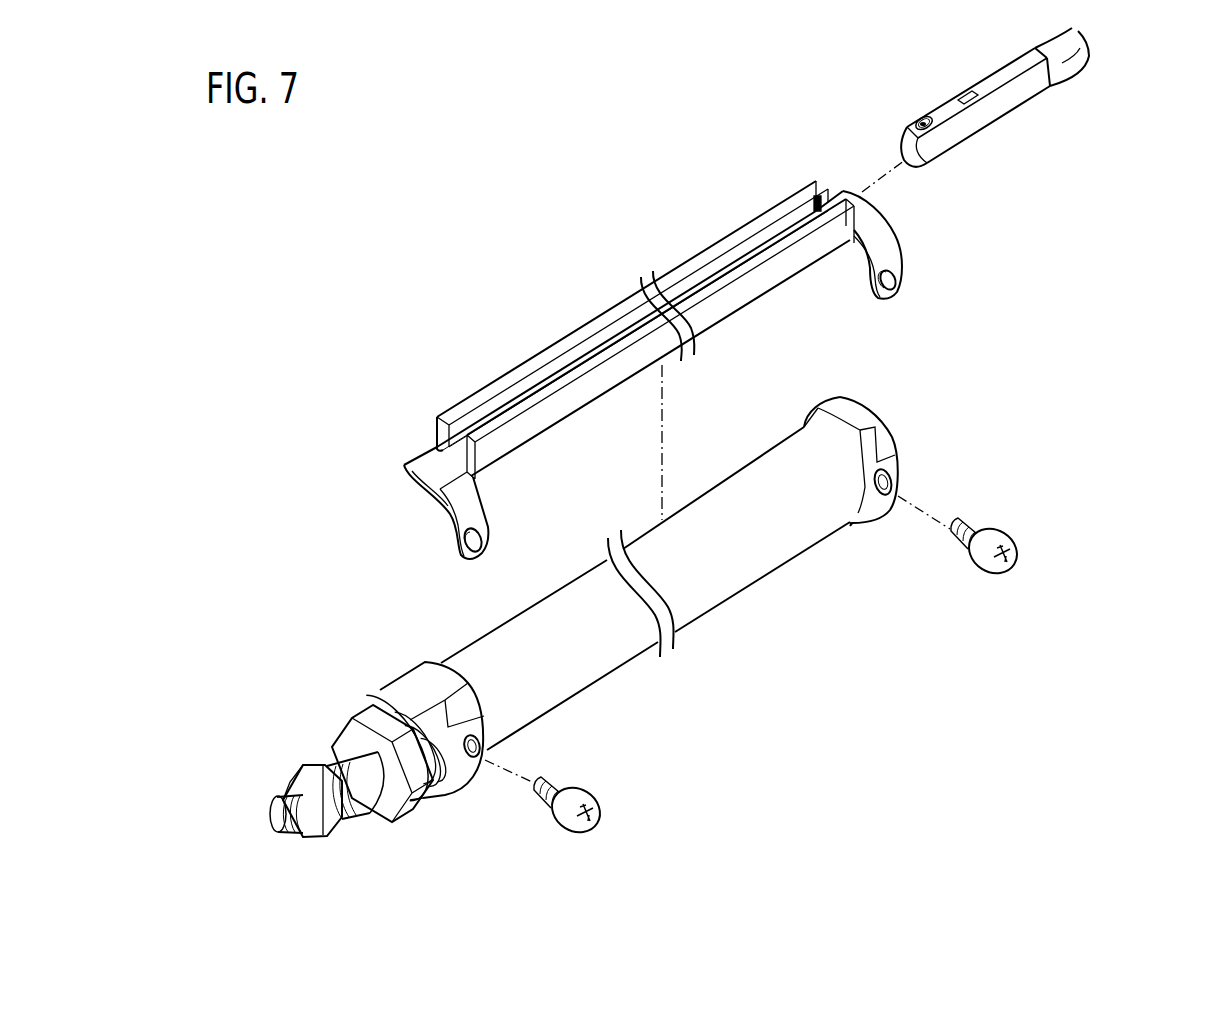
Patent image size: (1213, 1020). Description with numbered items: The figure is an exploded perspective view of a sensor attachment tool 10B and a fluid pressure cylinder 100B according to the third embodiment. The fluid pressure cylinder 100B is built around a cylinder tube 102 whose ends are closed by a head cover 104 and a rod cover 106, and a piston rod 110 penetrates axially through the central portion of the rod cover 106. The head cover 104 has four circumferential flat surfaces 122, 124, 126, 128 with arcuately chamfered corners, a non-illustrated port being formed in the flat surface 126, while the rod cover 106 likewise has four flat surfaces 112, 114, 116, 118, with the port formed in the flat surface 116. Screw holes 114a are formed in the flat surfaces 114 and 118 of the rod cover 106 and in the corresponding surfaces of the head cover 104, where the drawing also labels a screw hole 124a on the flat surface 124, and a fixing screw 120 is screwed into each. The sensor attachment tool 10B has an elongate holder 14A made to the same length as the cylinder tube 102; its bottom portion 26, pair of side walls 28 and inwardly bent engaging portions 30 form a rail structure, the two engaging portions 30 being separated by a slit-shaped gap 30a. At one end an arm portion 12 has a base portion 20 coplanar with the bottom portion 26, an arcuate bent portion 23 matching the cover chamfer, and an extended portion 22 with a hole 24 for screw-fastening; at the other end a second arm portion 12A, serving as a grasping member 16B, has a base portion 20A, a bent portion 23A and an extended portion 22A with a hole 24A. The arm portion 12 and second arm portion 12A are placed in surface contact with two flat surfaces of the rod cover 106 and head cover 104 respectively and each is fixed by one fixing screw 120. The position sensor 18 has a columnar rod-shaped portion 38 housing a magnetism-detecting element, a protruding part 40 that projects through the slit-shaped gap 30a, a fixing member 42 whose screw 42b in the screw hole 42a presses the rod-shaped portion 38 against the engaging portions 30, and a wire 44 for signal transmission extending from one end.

The sensor attachment tool 10B is at (388, 418).
The arm portion 12 is at (411, 458).
The second arm portion 12A is at (887, 210).
The holder 14A is at (597, 315).
The grasping member 16B is at (833, 184).
The position sensor 18 is at (967, 140).
The base portion 20 is at (427, 468).
The base portion 20A is at (870, 217).
The extended portion 22 is at (484, 512).
The extended portion 22A is at (897, 253).
The bent portion 23 is at (460, 497).
The bent portion 23A is at (870, 237).
The hole 24 is at (483, 538).
The hole 24A is at (900, 292).
The bottom portion 26 is at (437, 437).
The side walls 28 is at (612, 305).
The engaging portions 30 is at (705, 282).
The slit-shaped gap 30a is at (560, 370).
The rod-shaped portion 38 is at (1007, 110).
The protruding part 40 is at (1020, 67).
The fixing member 42 is at (917, 117).
The screw hole 42a is at (925, 113).
The screw 42b is at (913, 130).
The wire 44 is at (1073, 70).
The fluid pressure cylinder 100B is at (1088, 185).
The cylinder tube 102 is at (773, 547).
The head cover 104 is at (892, 460).
The rod cover 106 is at (423, 675).
The piston rod 110 is at (325, 756).
The flat surface 112 is at (447, 682).
The flat surface 114 is at (460, 767).
The screw holes 114a is at (487, 735).
The flat surface 116 is at (427, 800).
The flat surface 118 is at (376, 694).
The fixing screw 120 is at (993, 523).
The flat surface 122 is at (847, 415).
The flat surface 124 is at (895, 483).
The screw hole inner wall 124a is at (882, 495).
The flat surface 126 is at (851, 527).
The flat surface 128 is at (803, 428).